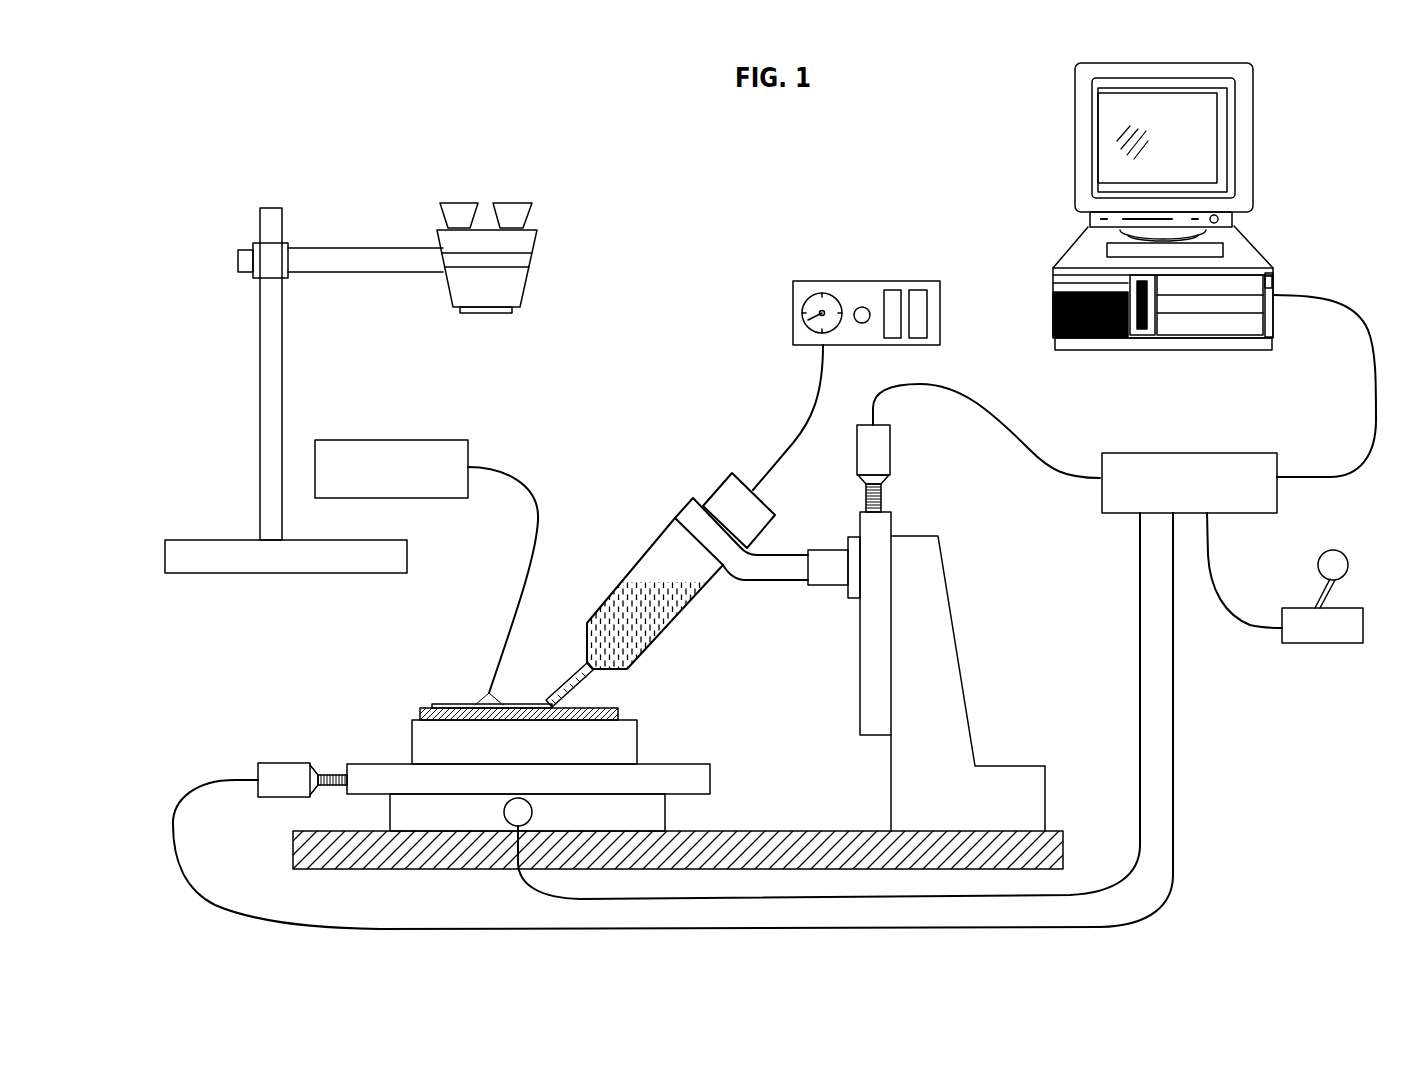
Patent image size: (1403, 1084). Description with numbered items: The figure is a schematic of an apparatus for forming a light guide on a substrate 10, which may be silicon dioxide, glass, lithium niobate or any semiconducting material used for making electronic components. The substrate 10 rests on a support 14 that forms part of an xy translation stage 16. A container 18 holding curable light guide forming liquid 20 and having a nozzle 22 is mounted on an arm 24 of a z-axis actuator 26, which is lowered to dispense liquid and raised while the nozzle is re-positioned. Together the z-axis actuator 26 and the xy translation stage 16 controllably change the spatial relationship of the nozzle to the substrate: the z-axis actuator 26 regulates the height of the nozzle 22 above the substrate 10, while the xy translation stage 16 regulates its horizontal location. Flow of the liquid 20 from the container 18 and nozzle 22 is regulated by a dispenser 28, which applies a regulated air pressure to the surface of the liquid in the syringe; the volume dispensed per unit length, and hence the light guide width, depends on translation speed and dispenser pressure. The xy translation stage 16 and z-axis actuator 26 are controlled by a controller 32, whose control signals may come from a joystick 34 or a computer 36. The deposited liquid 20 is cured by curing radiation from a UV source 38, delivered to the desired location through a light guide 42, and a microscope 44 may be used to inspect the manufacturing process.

The substrate 10 is at (422, 710).
The support 14 is at (412, 745).
The xy translation stage 16 is at (388, 810).
The container 18 is at (612, 597).
The curable light guide forming liquid 20 is at (658, 578).
The nozzle 22 is at (568, 678).
The arm 24 is at (785, 553).
The z-axis actuator 26 is at (891, 513).
The dispenser 28 is at (872, 278).
The controller 32 is at (1187, 452).
The joystick 34 is at (1310, 647).
The computer 36 is at (1267, 255).
The UV source 38 is at (442, 438).
The light guide 42 is at (527, 485).
The microscope 44 is at (538, 230).